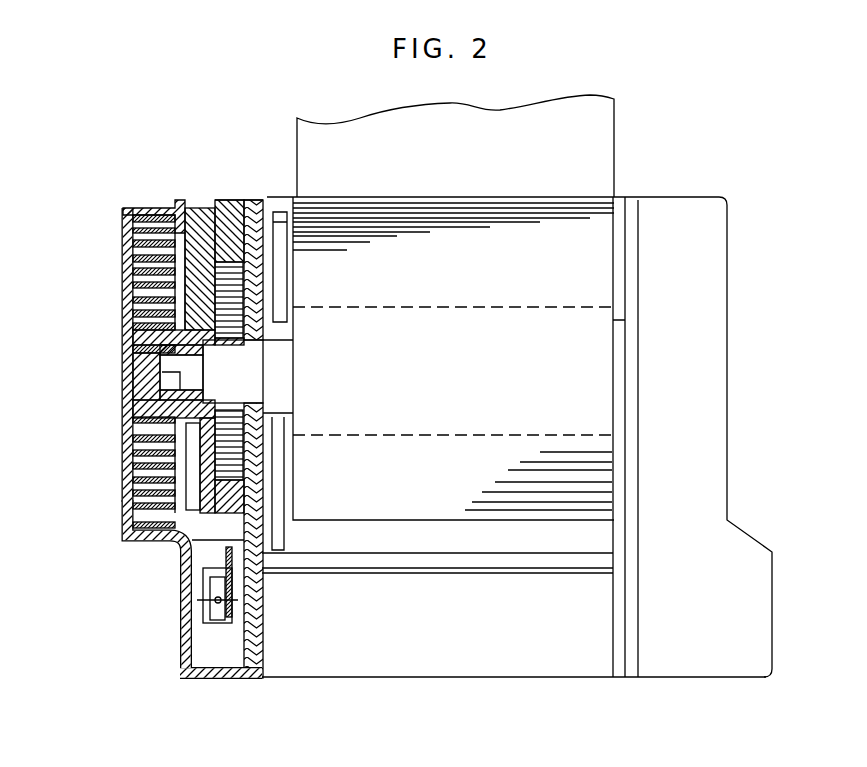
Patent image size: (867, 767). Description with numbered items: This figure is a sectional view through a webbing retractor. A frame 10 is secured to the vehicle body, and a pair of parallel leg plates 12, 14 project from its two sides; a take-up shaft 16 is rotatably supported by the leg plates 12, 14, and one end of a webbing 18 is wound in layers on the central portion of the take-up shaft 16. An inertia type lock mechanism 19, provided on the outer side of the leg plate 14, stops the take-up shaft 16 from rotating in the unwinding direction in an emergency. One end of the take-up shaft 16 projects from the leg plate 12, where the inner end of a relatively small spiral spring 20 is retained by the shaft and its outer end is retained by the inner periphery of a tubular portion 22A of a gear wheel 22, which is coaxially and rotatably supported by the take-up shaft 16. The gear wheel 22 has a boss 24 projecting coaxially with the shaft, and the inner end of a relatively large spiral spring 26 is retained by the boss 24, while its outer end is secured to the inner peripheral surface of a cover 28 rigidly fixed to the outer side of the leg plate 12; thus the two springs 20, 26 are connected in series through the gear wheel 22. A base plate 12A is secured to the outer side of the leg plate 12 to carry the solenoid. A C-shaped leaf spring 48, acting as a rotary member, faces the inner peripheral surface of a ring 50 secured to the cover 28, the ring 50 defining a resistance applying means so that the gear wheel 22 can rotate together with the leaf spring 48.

The frame 10 is at (453, 678).
The leg plate 12 is at (265, 617).
The base plate 12A is at (242, 633).
The leg plate 14 is at (622, 612).
The take-up shaft 16 is at (497, 302).
The webbing 18 is at (615, 148).
The lock mechanism 19 is at (708, 353).
The spiral spring 20 is at (225, 208).
The gear wheel 22 is at (210, 207).
The tubular portion 22A is at (243, 208).
The boss 24 is at (128, 338).
The spiral spring 26 is at (148, 210).
The cover 28 is at (160, 545).
The leaf spring 48 is at (190, 460).
The ring 50 is at (183, 210).